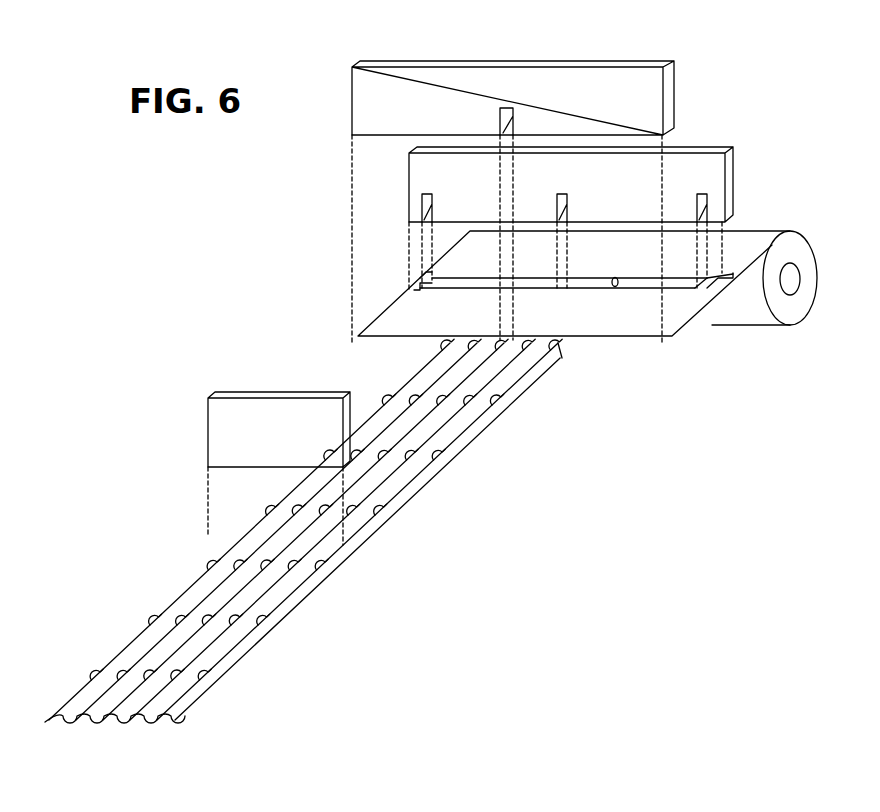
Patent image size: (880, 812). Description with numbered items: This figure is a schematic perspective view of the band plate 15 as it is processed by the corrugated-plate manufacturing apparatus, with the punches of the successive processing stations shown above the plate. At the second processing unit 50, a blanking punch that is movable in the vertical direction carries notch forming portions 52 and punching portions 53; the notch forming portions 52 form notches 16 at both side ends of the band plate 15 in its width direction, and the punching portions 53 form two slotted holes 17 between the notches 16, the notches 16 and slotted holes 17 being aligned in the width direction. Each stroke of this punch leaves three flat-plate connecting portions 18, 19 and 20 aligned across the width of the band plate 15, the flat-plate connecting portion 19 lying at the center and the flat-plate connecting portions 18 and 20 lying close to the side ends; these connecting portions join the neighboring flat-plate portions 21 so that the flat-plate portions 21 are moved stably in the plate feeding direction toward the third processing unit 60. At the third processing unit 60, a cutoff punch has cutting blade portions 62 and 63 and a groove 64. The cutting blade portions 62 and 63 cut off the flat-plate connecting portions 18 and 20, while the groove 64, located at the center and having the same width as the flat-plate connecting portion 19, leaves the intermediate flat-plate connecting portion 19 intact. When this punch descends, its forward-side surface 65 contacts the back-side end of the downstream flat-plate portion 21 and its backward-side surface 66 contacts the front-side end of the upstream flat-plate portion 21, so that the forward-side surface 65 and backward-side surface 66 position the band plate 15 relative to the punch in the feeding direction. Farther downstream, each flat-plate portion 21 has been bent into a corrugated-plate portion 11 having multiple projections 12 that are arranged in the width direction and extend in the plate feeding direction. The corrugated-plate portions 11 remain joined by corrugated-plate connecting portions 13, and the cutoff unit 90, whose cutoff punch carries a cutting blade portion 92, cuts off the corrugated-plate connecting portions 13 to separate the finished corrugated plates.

The corrugated-plate portion 11 is at (530, 370).
The projection 12 is at (125, 660).
The corrugated-plate connecting portion 13 is at (503, 337).
The band plate 15 is at (791, 233).
The notch 16 is at (414, 290).
The slotted hole 17 is at (537, 288).
The flat-plate connecting portion 18 is at (420, 270).
The flat-plate connecting portion 19 is at (572, 281).
The flat-plate connecting portion 20 is at (703, 290).
The flat-plate portion 21 is at (630, 338).
The second processing unit 50 is at (720, 150).
The notch forming portion 52 is at (413, 225).
The punching portion 53 is at (614, 276).
The third processing unit 60 is at (650, 62).
The cutting blade portion 62 is at (370, 137).
The cutting blade portion 63 is at (683, 152).
The groove 64 is at (500, 113).
The forward-side surface 65 is at (378, 107).
The backward-side surface 66 is at (648, 95).
The cutoff unit 90 is at (277, 396).
The cutting blade portion 92 is at (218, 468).